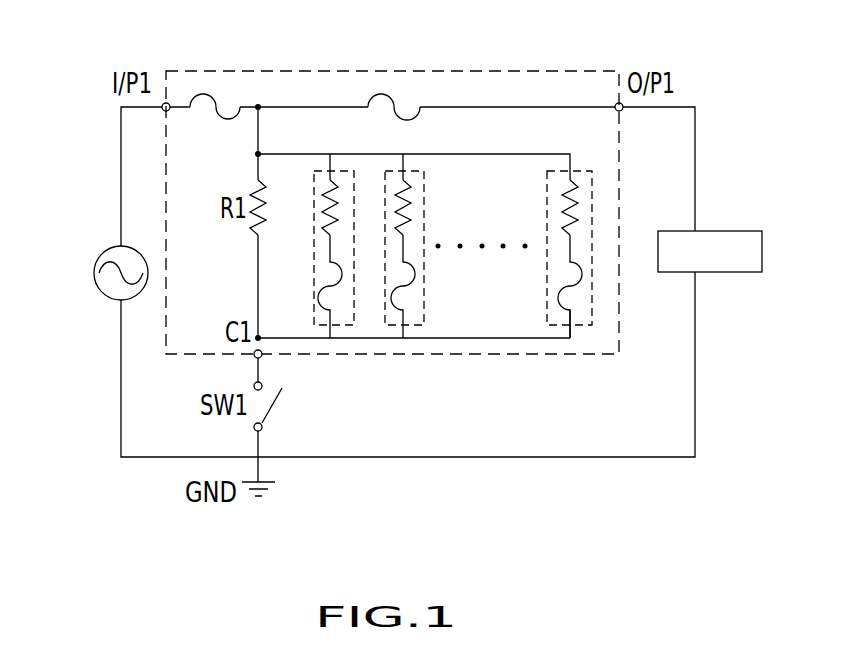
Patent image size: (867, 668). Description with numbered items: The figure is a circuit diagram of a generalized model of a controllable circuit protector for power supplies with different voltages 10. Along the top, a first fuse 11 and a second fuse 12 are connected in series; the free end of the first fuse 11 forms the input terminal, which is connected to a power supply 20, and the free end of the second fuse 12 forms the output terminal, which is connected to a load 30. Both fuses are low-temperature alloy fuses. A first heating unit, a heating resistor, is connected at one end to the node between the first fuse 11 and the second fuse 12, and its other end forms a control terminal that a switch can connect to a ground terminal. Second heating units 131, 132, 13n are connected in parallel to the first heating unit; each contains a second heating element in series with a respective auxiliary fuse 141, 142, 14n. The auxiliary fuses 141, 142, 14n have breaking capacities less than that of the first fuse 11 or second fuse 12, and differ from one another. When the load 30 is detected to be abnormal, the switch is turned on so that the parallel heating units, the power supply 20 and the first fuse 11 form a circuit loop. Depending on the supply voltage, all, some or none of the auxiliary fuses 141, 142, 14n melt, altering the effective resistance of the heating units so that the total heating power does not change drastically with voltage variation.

The controllable circuit protector for power supplies with different voltages 10 is at (533, 70).
The first fuse 11 is at (228, 105).
The second fuse 12 is at (408, 106).
The second heating unit 131 is at (349, 335).
The second heating unit 132 is at (420, 327).
The second heating unit 13n is at (588, 170).
The auxiliary fuse 141 is at (317, 300).
The auxiliary fuse 142 is at (417, 274).
The auxiliary fuse 14n is at (583, 289).
The power supply 20 is at (103, 255).
The load 30 is at (720, 231).